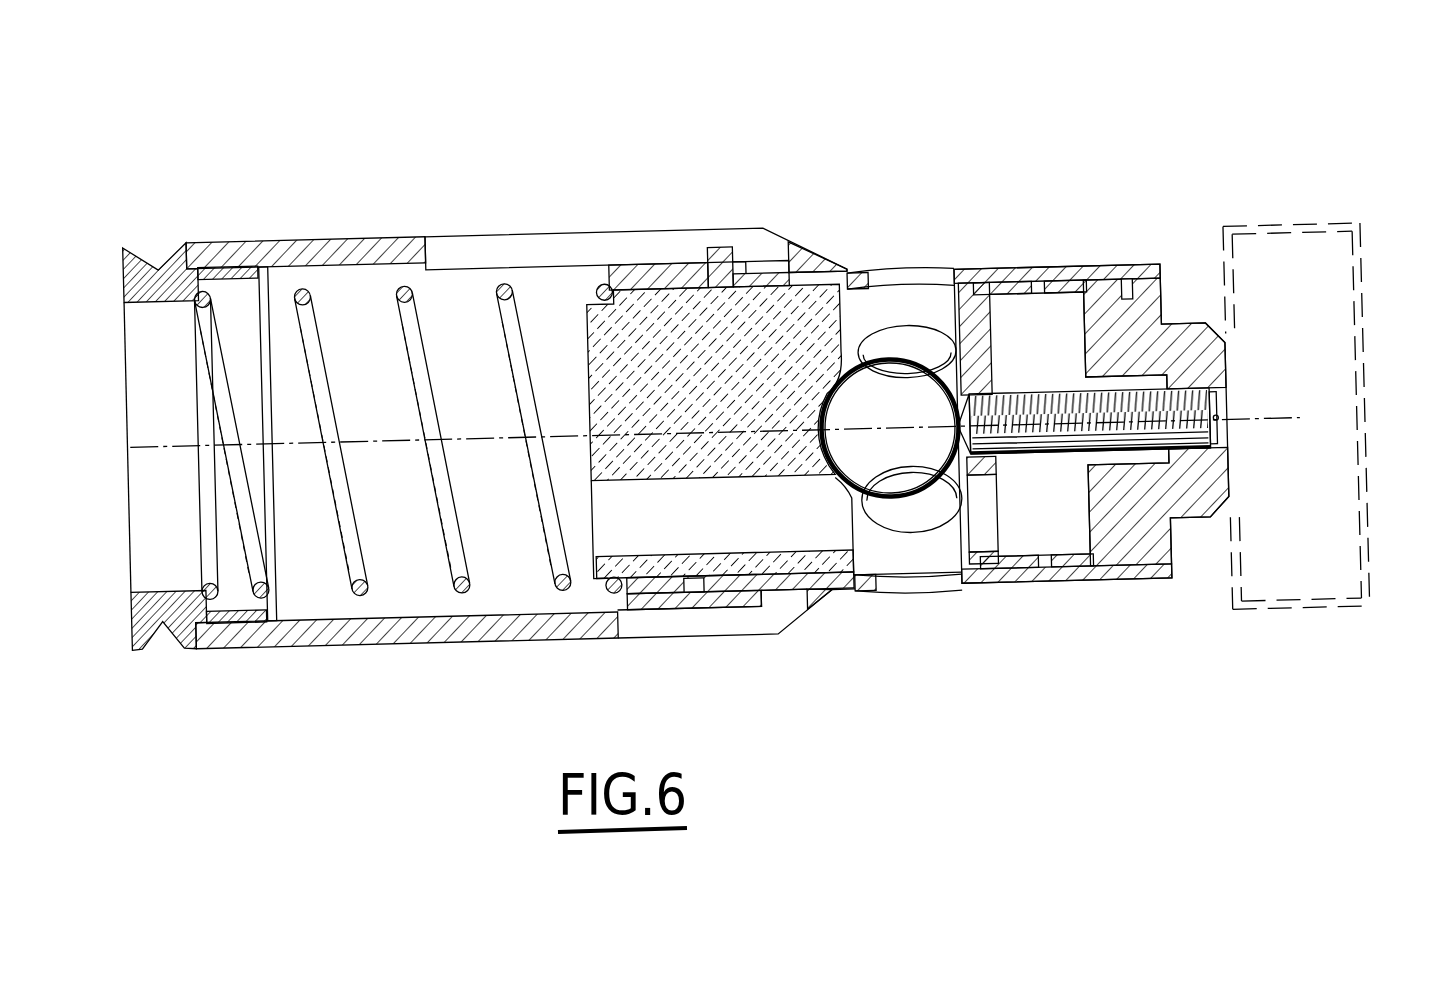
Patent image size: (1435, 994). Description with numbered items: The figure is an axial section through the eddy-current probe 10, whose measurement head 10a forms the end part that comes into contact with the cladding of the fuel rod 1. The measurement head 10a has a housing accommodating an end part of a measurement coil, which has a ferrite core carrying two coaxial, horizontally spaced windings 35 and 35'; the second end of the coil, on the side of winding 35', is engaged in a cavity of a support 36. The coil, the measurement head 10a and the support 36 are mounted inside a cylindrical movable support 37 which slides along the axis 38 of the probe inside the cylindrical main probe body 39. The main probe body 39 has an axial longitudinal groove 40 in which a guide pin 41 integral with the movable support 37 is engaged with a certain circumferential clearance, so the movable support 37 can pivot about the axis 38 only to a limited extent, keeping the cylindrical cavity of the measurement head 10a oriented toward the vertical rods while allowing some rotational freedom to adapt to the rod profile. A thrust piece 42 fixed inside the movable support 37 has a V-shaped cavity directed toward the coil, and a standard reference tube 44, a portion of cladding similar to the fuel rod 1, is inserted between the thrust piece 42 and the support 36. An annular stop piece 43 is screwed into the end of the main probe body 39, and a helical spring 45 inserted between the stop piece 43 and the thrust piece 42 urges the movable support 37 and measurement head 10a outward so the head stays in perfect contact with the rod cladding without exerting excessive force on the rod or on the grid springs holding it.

The fuel rod 1 is at (1363, 290).
The probe 10 is at (1043, 180).
The measurement head 10a is at (1180, 348).
The winding 35 is at (1088, 557).
The winding 35' is at (1090, 579).
The support 36 is at (977, 355).
The movable support 37 is at (828, 596).
The axis 38 is at (388, 447).
The main probe body 39 is at (360, 240).
The axial longitudinal groove 40 is at (674, 243).
The guide pin 41 is at (722, 243).
The thrust piece 42 is at (650, 288).
The annular stop piece 43 is at (175, 630).
The standard reference tube 44 is at (892, 356).
The helical spring 45 is at (345, 558).